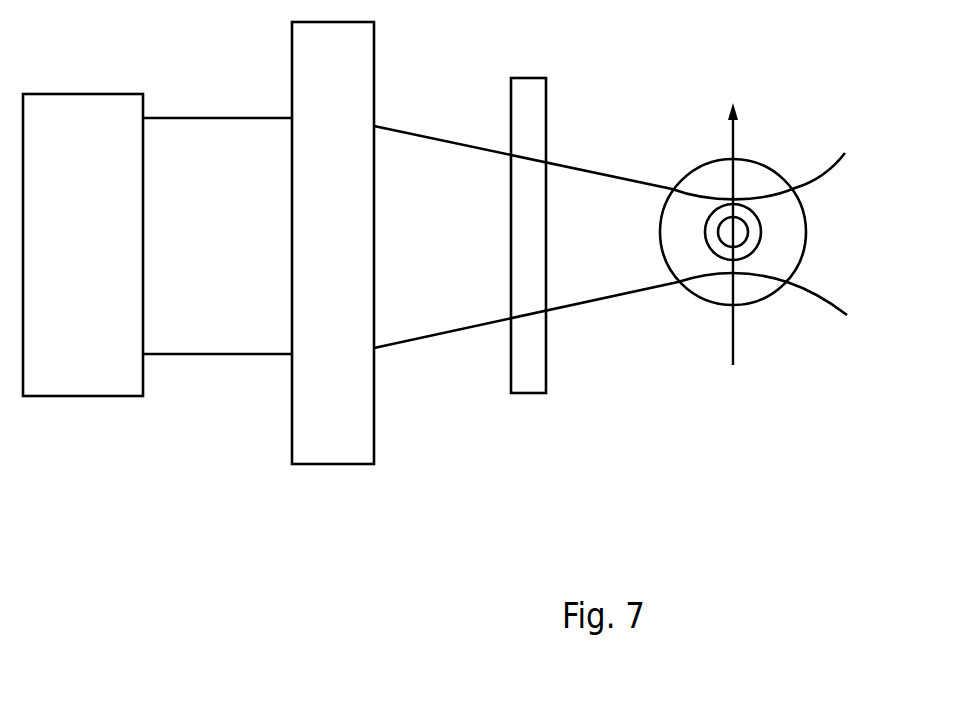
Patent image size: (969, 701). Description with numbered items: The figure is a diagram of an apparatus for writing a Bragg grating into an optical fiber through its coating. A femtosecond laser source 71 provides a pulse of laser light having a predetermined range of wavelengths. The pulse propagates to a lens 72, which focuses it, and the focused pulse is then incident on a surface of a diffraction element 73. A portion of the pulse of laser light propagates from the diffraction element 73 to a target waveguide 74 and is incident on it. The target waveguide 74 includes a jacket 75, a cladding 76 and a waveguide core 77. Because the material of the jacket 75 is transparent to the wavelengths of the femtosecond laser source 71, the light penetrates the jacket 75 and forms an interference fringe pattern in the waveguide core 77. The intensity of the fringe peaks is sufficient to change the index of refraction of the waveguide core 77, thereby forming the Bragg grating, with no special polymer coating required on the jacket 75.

The femtosecond laser source 71 is at (113, 396).
The lens 72 is at (347, 464).
The diffraction element 73 is at (530, 393).
The target waveguide 74 is at (757, 153).
The jacket 75 is at (702, 302).
The cladding 76 is at (758, 240).
The waveguide core 77 is at (747, 220).